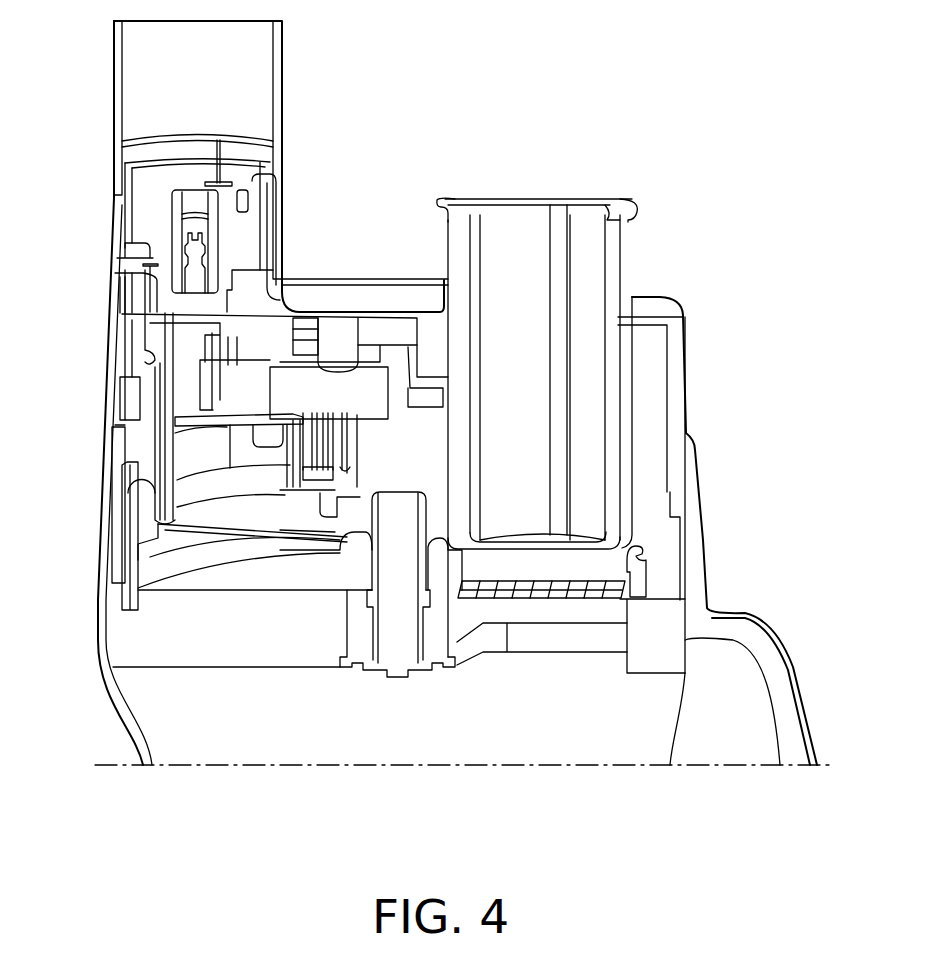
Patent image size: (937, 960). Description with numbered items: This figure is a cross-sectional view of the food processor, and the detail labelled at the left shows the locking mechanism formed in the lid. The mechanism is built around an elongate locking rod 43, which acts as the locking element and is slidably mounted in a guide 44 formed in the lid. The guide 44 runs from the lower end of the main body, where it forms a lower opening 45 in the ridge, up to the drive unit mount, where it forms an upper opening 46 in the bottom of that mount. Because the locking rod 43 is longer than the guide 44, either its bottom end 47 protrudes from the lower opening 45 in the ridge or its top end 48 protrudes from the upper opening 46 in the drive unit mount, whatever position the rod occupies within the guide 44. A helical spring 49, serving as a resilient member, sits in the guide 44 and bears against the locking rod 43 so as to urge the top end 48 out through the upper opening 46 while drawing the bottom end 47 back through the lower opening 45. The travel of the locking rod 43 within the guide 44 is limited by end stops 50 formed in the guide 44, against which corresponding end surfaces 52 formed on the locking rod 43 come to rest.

The locking rod 43 is at (140, 375).
The guide 44 is at (122, 313).
The lower opening 45 is at (96, 538).
The upper opening 46 is at (122, 276).
The bottom end 47 is at (118, 572).
The top end 48 is at (130, 262).
The helical spring 49 is at (140, 398).
The end stops 50 is at (116, 429).
The end surfaces 52 is at (152, 358).